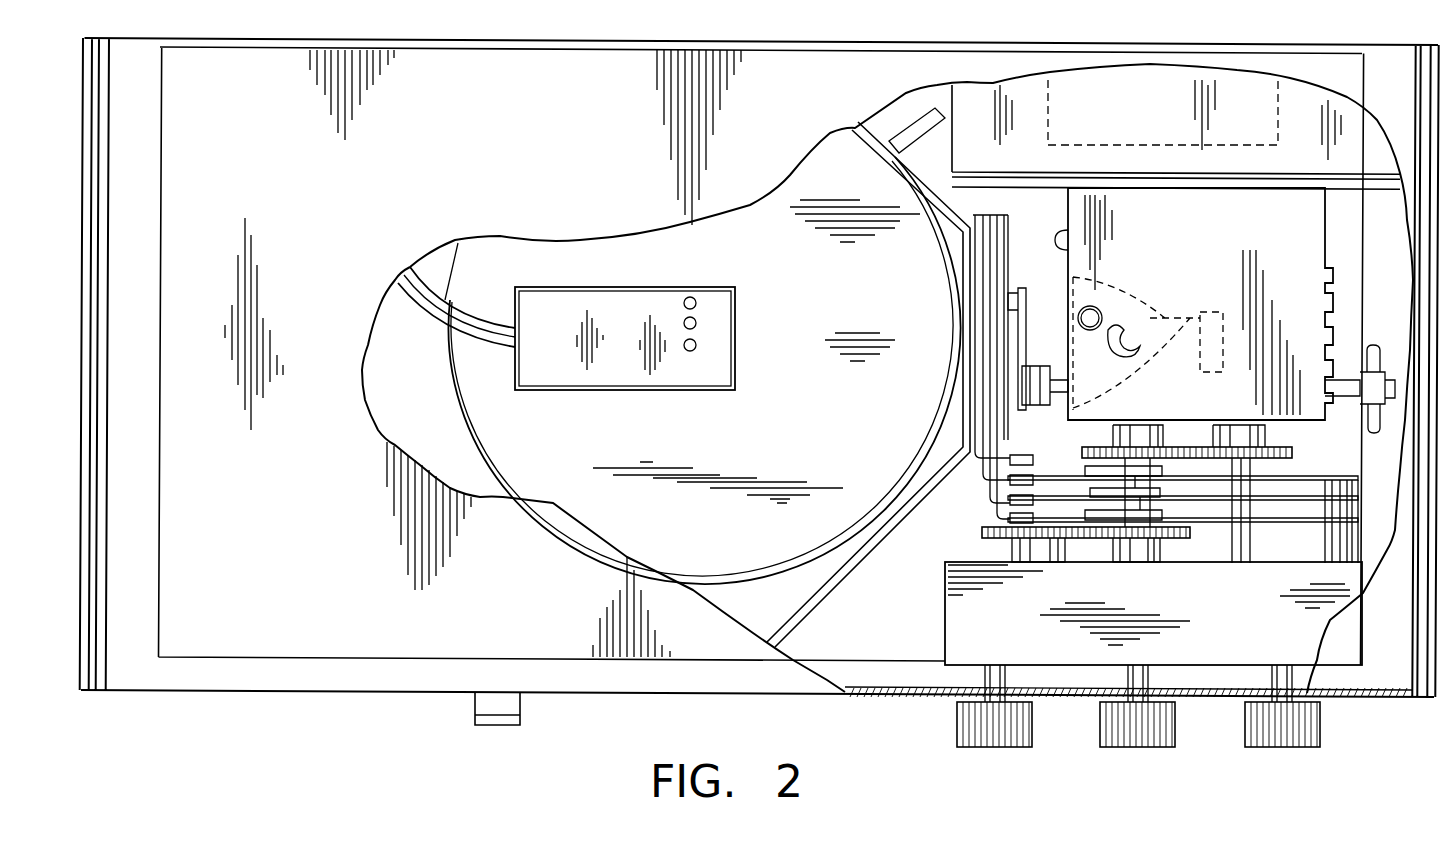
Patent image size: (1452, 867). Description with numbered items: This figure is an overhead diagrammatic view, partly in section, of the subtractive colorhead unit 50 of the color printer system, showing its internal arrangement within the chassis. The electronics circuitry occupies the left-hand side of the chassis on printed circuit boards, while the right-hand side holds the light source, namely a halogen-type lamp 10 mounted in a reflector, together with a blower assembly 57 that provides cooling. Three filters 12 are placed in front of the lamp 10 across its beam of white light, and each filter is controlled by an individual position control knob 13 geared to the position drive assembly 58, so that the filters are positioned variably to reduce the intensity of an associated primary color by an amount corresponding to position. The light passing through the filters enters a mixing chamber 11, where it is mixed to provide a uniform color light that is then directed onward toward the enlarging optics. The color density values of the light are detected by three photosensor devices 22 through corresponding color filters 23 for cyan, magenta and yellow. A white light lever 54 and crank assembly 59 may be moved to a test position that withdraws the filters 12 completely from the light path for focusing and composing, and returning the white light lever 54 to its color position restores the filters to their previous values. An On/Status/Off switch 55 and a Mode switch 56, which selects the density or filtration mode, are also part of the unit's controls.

The lamp 10 is at (1130, 295).
The mixing chamber 11 is at (797, 581).
The filters 12 is at (986, 232).
The position control knob 13 is at (998, 738).
The photosensor device 22 is at (669, 338).
The color filters 23 is at (697, 345).
The colorhead unit 50 is at (1383, 699).
The white light lever 54 is at (1362, 364).
The On/Status/Off switch 55 is at (538, 726).
The Mode switch 56 is at (510, 722).
The blower assembly 57 is at (1158, 110).
The position drive assembly 58 is at (1299, 456).
The crank assembly 59 is at (1030, 318).